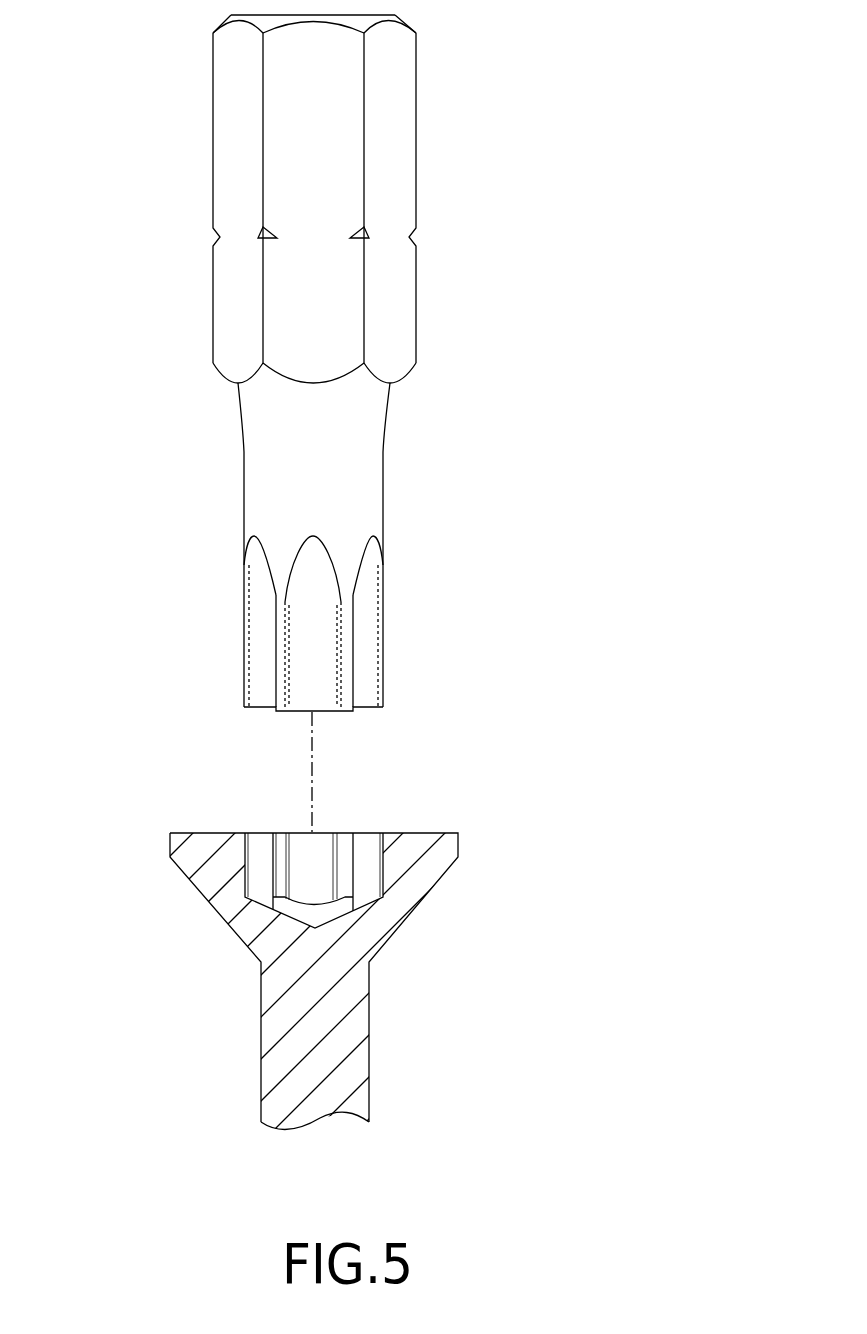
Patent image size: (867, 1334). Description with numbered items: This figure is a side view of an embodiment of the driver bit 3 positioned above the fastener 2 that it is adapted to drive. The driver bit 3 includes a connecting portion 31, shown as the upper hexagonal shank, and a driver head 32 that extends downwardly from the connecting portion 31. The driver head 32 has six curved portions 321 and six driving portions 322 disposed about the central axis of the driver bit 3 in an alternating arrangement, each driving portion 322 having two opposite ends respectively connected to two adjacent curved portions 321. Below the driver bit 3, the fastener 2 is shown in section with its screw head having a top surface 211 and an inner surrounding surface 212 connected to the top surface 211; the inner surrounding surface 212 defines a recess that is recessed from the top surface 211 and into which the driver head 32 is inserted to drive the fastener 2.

The driver bit 3 is at (165, 143).
The connecting portion 31 is at (404, 289).
The driver head 32 is at (418, 559).
The curved portions 321 is at (373, 621).
The driving portions 322 is at (380, 679).
The fastener 2 is at (180, 1040).
The top surface 211 is at (428, 832).
The inner surrounding surface 212 is at (343, 850).